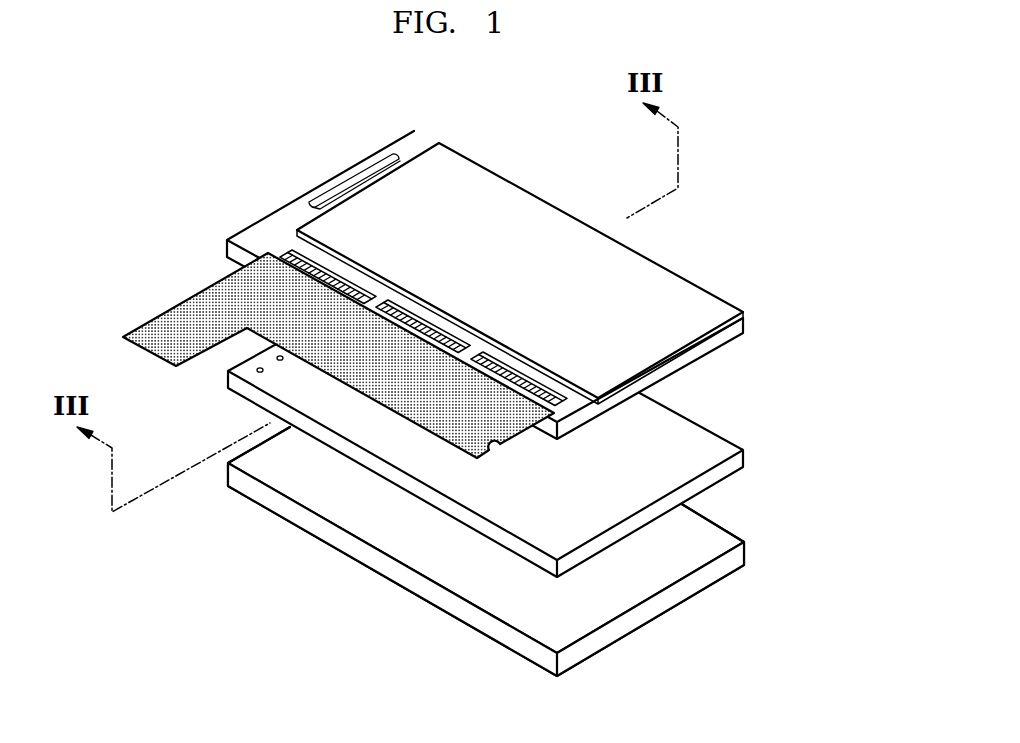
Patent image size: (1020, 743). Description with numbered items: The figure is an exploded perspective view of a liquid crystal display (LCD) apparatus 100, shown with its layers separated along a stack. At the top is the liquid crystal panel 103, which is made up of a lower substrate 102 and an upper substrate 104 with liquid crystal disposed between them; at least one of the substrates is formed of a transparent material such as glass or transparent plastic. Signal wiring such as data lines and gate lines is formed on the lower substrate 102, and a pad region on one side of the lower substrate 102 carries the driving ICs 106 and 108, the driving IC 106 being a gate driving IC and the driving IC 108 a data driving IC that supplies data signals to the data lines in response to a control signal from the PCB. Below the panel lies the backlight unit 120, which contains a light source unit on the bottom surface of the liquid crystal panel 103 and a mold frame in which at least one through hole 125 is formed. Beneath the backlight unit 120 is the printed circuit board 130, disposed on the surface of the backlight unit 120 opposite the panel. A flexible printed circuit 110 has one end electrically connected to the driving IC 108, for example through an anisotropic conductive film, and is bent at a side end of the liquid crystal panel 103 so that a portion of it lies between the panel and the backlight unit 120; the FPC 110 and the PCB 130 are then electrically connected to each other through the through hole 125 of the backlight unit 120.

The liquid crystal display (LCD) apparatus 100 is at (243, 111).
The lower substrate 102 is at (518, 273).
The liquid crystal panel 103 is at (546, 273).
The upper substrate 104 is at (744, 316).
The driving IC (gate driving IC) 106 is at (358, 173).
The driving IC (data driving IC) 108 is at (296, 242).
The flexible printed circuit (FPC) 110 is at (167, 317).
The backlight unit 120 is at (250, 391).
The through hole 125 is at (258, 368).
The printed circuit board (PCB) 130 is at (252, 492).